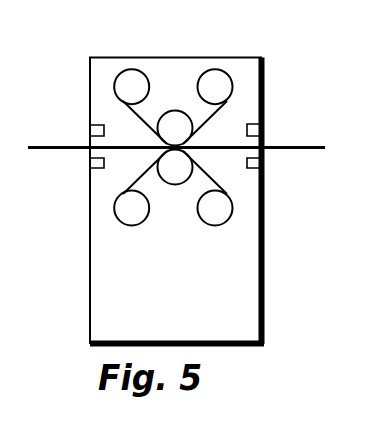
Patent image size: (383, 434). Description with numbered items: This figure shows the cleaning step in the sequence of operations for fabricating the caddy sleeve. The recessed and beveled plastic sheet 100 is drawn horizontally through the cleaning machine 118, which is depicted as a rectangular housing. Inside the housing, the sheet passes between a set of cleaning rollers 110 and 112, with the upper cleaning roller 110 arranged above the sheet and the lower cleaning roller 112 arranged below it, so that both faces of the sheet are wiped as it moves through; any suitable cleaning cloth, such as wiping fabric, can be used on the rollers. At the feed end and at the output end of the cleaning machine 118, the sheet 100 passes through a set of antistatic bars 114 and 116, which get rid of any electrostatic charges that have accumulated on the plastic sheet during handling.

The plastic sheet 100 is at (66, 150).
The cleaning roller 110 is at (175, 123).
The cleaning roller 112 is at (178, 172).
The antistatic bar 114 is at (90, 129).
The antistatic bar 116 is at (264, 129).
The cleaning machine 118 is at (97, 275).